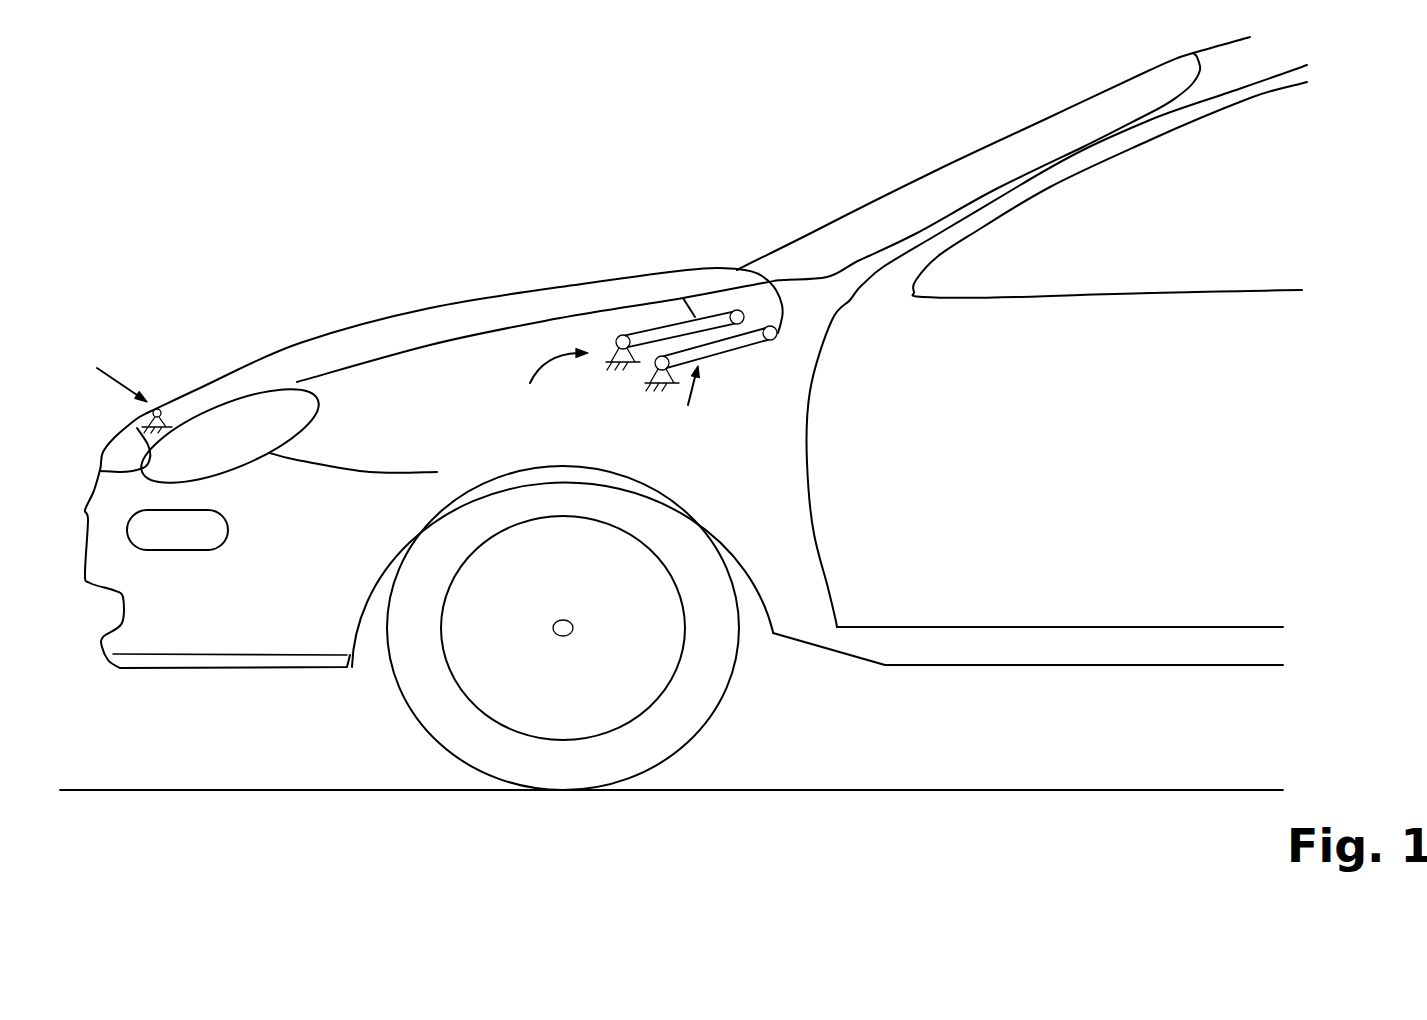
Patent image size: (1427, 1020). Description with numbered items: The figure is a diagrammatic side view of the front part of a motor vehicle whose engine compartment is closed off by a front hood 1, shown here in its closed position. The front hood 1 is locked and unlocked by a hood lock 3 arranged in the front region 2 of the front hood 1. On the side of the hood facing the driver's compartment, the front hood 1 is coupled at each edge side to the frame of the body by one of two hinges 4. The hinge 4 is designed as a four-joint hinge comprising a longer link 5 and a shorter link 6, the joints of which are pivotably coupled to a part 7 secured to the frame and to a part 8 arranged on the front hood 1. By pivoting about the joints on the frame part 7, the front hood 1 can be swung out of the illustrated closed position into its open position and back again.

The front hood 1 is at (423, 325).
The front region 2 is at (170, 405).
The hood lock 3 is at (112, 371).
The hinge 4 is at (555, 387).
The longer link 5 is at (656, 337).
The shorter link 6 is at (742, 342).
The frame part 7 is at (687, 403).
The hood part 8 is at (701, 305).